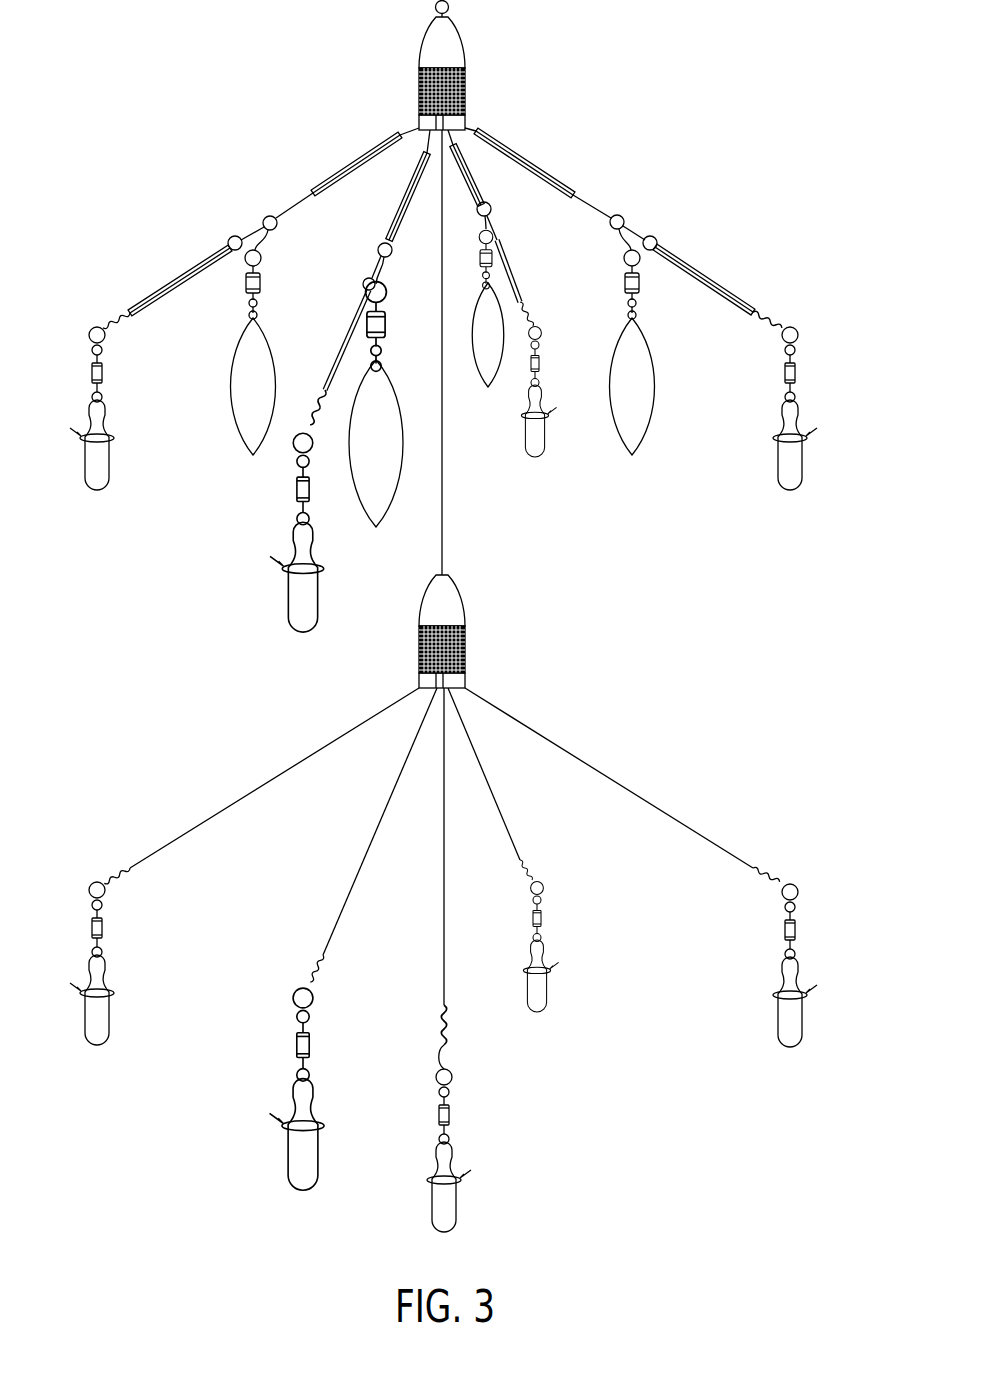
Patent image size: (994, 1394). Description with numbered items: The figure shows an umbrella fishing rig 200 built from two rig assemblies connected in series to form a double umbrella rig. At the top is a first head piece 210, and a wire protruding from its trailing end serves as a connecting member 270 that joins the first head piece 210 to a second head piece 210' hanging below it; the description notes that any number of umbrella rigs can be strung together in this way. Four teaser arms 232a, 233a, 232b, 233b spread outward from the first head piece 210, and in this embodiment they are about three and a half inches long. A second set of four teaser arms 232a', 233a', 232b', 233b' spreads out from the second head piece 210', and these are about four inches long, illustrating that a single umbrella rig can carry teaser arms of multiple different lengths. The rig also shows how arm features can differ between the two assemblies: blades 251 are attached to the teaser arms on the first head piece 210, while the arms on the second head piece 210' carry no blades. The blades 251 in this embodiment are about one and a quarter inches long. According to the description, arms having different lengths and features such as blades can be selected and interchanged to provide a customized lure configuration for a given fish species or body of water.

The umbrella fishing rig 200 is at (300, 108).
The head piece 210 is at (468, 66).
The head piece 210' is at (474, 631).
The teaser arm 233a is at (260, 229).
The teaser arm 232b is at (624, 229).
The teaser arm 232a is at (369, 278).
The teaser arm 233b is at (497, 228).
The blade 251 is at (239, 431).
The connecting member 270 is at (443, 490).
The teaser arm 233a' is at (261, 786).
The teaser arm 232b' is at (623, 786).
The teaser arm 232a' is at (360, 835).
The teaser arm 233b' is at (515, 784).